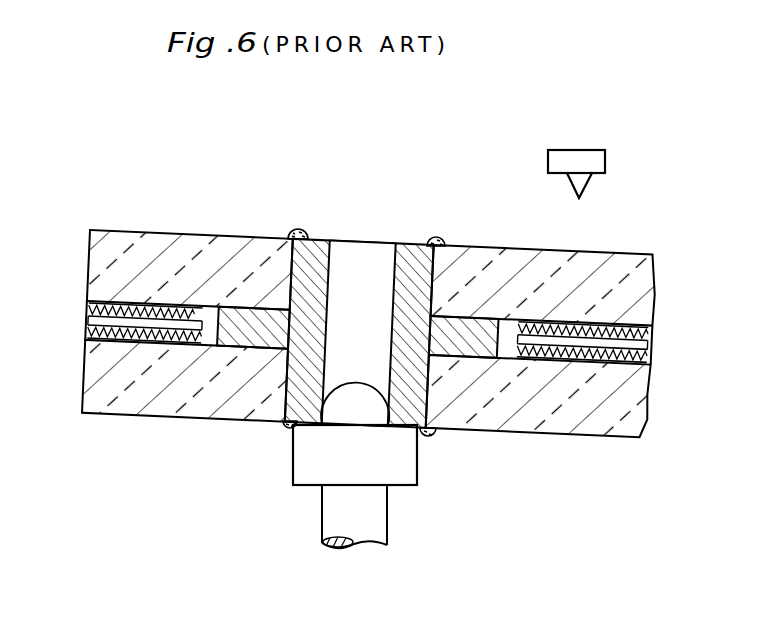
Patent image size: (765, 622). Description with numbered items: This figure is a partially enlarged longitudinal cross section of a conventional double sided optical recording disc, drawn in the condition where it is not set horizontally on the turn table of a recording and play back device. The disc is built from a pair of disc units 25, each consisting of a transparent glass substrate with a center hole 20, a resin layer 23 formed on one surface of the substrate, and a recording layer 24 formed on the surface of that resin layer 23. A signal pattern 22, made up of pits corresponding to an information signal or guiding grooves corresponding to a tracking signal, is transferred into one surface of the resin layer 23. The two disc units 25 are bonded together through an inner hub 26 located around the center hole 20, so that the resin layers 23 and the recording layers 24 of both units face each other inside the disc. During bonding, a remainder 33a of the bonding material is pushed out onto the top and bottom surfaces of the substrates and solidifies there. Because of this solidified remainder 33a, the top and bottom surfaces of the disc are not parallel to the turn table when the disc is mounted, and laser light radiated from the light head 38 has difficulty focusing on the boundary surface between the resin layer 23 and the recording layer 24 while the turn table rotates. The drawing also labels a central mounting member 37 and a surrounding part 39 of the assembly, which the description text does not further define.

The center hole 20 is at (289, 278).
The signal pattern 22 is at (105, 310).
The resin layer 23 is at (105, 304).
The recording layer 24 is at (92, 321).
The disc unit 25 is at (183, 228).
The inner hub 26 is at (242, 316).
The remainder of the bonding material 33a is at (284, 431).
The pin 37 is at (403, 466).
The light head 38 is at (596, 165).
The sleeve 39 is at (326, 240).